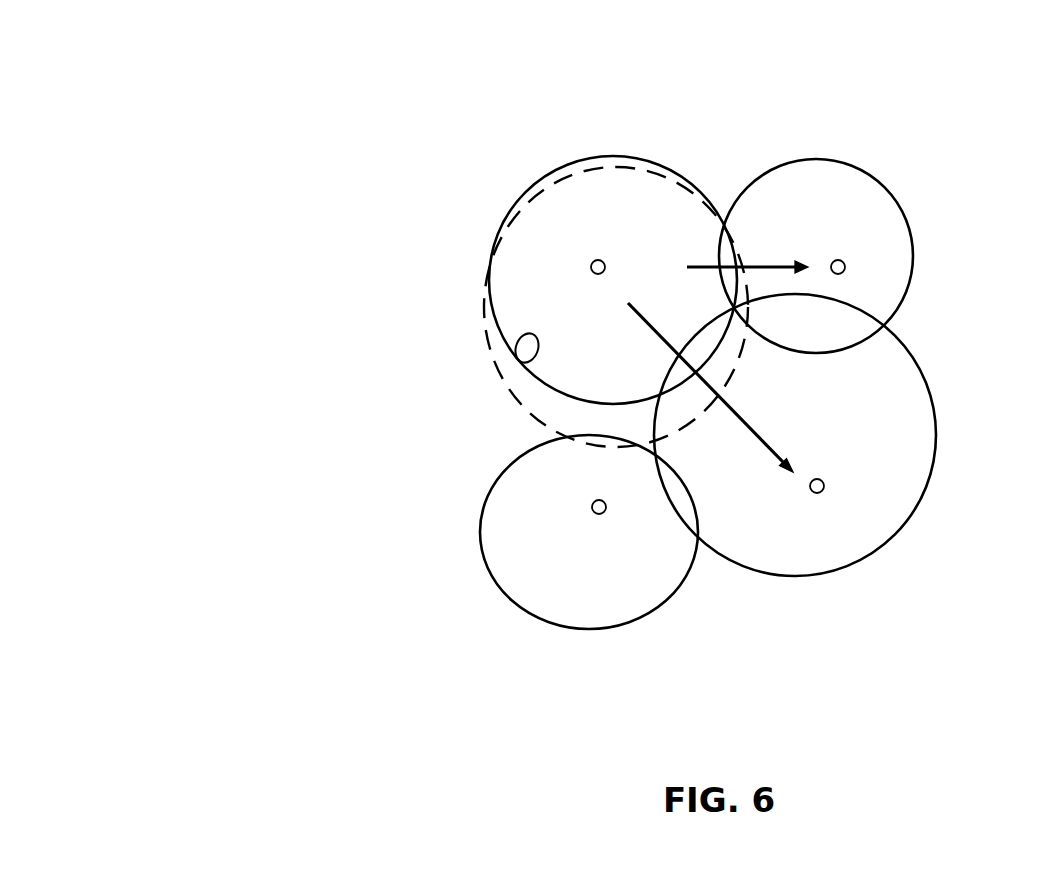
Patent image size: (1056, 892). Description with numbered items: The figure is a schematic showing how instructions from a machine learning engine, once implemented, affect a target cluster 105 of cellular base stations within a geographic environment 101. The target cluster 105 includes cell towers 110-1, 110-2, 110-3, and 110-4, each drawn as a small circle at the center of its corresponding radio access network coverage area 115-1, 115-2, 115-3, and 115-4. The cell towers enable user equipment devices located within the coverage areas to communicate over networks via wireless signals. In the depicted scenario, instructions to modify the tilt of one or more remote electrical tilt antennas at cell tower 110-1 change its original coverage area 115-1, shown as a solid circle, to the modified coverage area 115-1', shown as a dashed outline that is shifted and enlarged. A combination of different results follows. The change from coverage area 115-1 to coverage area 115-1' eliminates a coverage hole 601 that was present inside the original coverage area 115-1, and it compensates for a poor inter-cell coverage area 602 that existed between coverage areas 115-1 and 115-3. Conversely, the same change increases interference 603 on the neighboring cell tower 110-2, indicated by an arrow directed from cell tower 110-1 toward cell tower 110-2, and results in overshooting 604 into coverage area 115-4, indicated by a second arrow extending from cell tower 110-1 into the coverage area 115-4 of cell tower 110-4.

The geographic environment 101 is at (307, 75).
The cluster 105 is at (937, 155).
The cell tower 110-1 is at (598, 259).
The cell tower 110-2 is at (838, 260).
The cell tower 110-3 is at (599, 514).
The cell tower 110-4 is at (817, 493).
The coverage area 115-1 is at (570, 279).
The coverage area 115-1' is at (577, 307).
The coverage area 115-2 is at (915, 240).
The coverage area 115-3 is at (480, 522).
The coverage area 115-4 is at (922, 498).
The coverage hole 601 is at (528, 332).
The poor inter-cell coverage area 602 is at (553, 413).
The interference 603 is at (793, 260).
The overshooting 604 is at (782, 443).